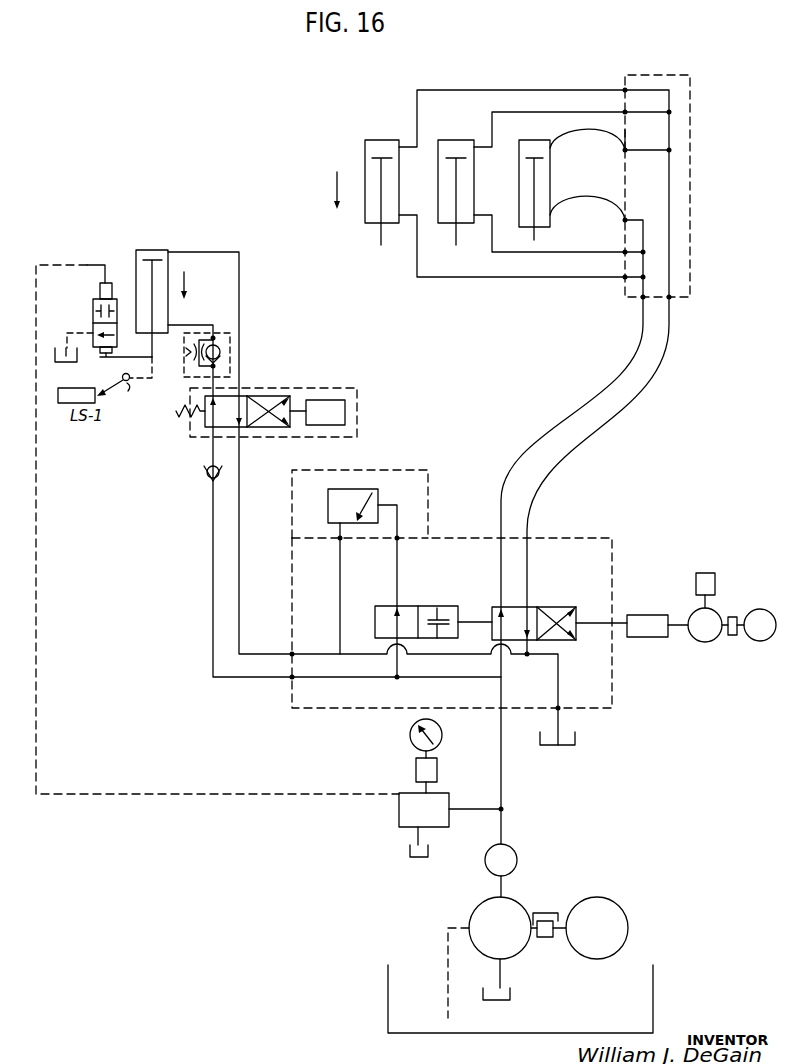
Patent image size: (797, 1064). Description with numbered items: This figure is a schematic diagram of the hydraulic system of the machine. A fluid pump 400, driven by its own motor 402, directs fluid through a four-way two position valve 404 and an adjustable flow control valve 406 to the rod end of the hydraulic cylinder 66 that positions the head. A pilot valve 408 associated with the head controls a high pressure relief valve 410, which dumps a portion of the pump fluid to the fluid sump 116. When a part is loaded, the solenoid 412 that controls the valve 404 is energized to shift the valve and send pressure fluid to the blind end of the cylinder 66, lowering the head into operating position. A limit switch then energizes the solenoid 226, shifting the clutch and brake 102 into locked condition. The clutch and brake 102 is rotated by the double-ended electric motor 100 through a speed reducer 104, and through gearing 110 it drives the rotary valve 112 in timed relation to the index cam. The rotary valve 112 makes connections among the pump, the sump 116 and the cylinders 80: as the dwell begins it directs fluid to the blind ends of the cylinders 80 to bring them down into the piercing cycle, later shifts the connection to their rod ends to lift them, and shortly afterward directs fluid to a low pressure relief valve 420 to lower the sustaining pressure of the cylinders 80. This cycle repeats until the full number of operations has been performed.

The cylinders 80 is at (365, 142).
The hydraulic cylinder 66 is at (152, 250).
The pilot valve 408 is at (93, 308).
The adjustable flow control valve 406 is at (230, 335).
The solenoid 412 is at (325, 410).
The four-way two position valve 404 is at (203, 437).
The low pressure relief valve 420 is at (365, 497).
The rotary valve 112 is at (622, 530).
The solenoid 226 is at (713, 583).
The speed reducer 104 is at (736, 613).
The gearing 110 is at (645, 637).
The clutch and brake 102 is at (710, 641).
The double-ended electric motor 100 is at (763, 642).
The fluid sump 116 is at (565, 748).
The high pressure relief valve 410 is at (405, 815).
The fluid pump 400 is at (510, 905).
The motor 402 is at (596, 910).